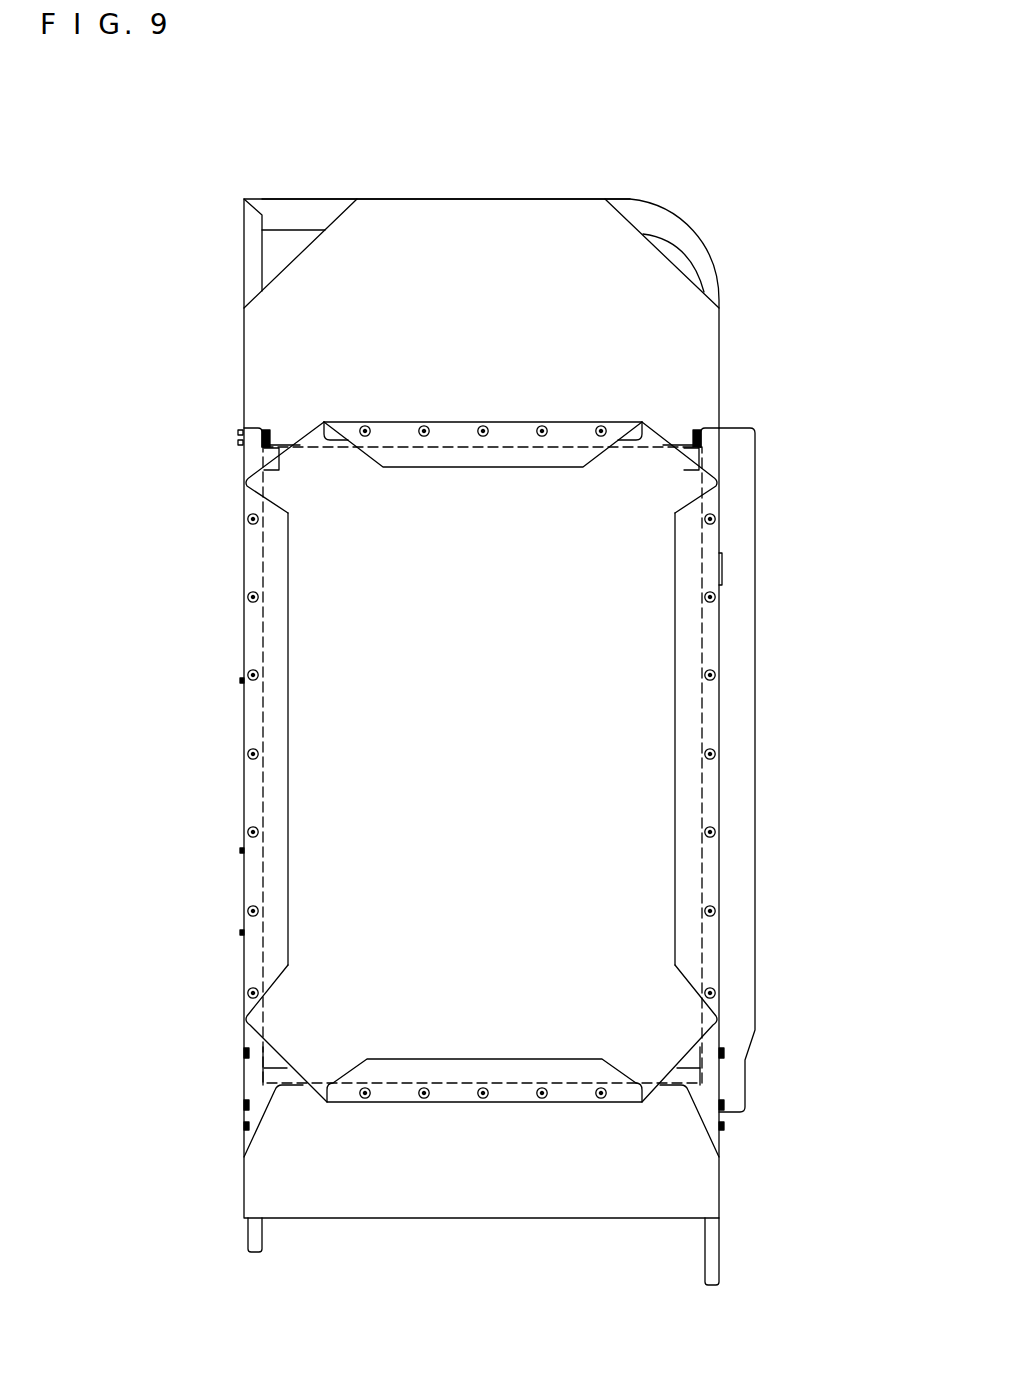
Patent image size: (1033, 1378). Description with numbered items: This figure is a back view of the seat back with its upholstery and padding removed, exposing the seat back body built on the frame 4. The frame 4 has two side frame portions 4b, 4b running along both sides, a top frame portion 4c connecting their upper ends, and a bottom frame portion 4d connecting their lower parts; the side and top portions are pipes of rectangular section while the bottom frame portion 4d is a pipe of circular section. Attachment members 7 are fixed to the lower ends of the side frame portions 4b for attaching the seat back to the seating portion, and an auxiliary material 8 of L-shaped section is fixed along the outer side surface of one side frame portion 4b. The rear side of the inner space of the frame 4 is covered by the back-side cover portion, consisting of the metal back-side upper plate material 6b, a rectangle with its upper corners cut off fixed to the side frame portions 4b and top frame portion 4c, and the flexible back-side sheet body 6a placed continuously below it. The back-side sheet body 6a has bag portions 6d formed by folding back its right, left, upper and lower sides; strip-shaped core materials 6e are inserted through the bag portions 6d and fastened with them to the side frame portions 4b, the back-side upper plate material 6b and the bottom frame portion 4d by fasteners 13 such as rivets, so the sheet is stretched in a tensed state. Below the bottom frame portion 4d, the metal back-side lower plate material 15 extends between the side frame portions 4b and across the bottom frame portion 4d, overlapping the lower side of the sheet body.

The frame 4 is at (690, 218).
The side frame portion 4b is at (260, 1115).
The top frame portion 4c is at (300, 215).
The bottom frame portion 4d is at (262, 1077).
The back-side sheet body 6a is at (447, 708).
The back-side upper plate material 6b is at (481, 240).
The bag portion 6d is at (513, 433).
The core material 6e is at (272, 481).
The attachment member 7 is at (247, 1236).
The auxiliary material 8 is at (757, 718).
The fastener 13 is at (620, 420).
The back-side lower plate material 15 is at (442, 1183).